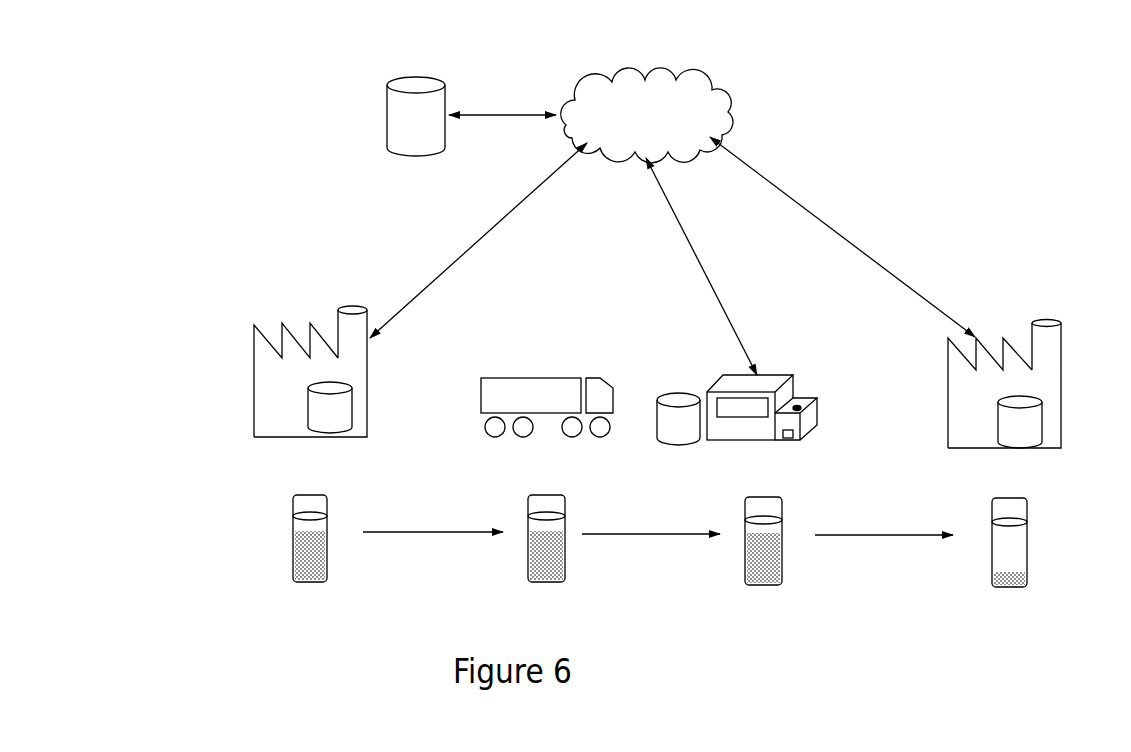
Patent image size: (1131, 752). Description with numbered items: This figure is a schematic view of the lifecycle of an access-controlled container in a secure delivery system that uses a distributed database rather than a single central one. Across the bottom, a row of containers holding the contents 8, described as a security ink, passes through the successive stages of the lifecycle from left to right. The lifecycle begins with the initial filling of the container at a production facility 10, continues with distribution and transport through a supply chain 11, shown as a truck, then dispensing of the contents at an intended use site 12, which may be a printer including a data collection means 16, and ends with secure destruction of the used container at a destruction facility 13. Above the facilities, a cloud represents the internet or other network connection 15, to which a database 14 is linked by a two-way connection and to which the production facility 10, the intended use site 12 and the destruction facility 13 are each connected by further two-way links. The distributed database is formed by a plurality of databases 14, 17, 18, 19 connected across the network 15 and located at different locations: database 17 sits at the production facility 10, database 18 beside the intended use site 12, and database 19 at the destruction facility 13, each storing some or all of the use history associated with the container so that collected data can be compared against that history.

The contents 8 is at (290, 553).
The production facility 10 is at (287, 388).
The supply chain 11 is at (537, 388).
The intended use site 12 is at (723, 383).
The destruction facility 13 is at (960, 380).
The database 14 is at (395, 124).
The network connection 15 is at (703, 103).
The data collection means 16 is at (790, 435).
The database 17 is at (308, 404).
The database 18 is at (667, 428).
The database 19 is at (1045, 420).